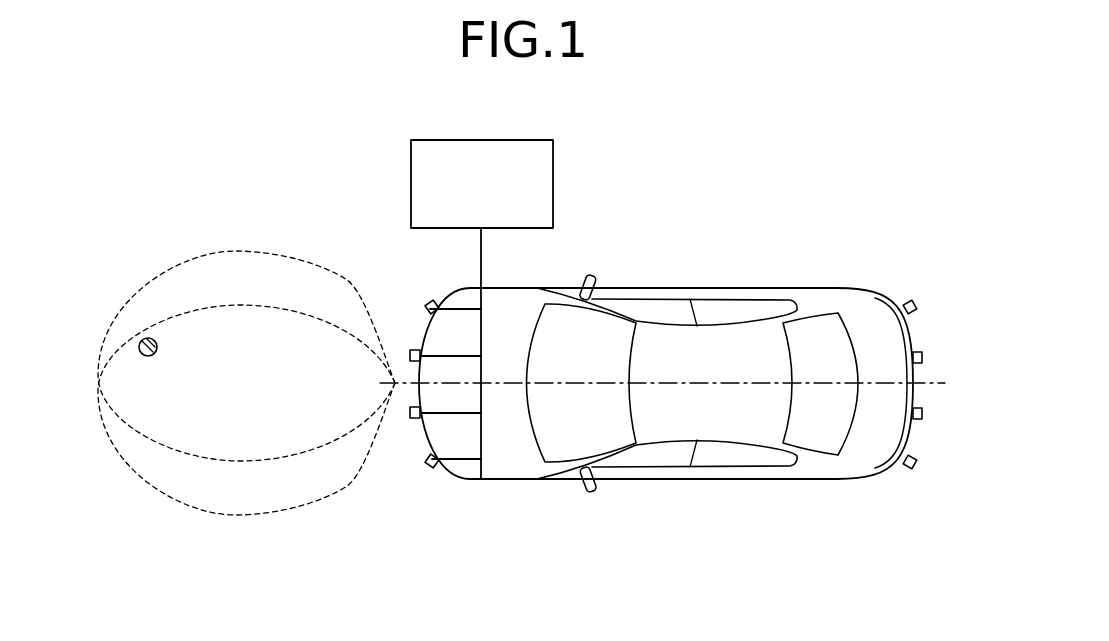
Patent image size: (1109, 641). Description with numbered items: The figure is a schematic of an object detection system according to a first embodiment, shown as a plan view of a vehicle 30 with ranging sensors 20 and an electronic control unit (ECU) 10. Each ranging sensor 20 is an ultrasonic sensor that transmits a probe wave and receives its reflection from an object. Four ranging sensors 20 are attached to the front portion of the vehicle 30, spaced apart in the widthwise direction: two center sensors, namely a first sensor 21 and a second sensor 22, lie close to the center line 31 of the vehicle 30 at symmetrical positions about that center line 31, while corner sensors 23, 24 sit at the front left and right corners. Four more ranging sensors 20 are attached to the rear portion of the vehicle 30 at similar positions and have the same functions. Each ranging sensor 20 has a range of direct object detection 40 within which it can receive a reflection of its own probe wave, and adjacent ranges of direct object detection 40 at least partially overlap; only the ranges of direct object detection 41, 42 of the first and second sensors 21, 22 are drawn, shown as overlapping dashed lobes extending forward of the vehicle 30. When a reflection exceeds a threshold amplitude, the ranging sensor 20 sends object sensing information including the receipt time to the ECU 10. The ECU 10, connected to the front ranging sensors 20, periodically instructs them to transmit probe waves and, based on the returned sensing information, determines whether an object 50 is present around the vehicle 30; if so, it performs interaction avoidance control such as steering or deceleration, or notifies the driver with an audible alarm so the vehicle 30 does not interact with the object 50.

The electronic control unit (ECU) 10 is at (514, 140).
The ranging sensor 20 is at (661, 368).
The first sensor 21 is at (415, 348).
The second sensor 22 is at (415, 420).
The corner sensor 23 is at (433, 300).
The corner sensor 24 is at (433, 468).
The vehicle 30 is at (720, 288).
The center line 31 is at (681, 386).
The range of direct object detection 40 is at (246, 385).
The range of direct object detection of the first sensor 41 is at (146, 272).
The range of direct object detection of the second sensor 42 is at (146, 494).
The object 50 is at (147, 339).